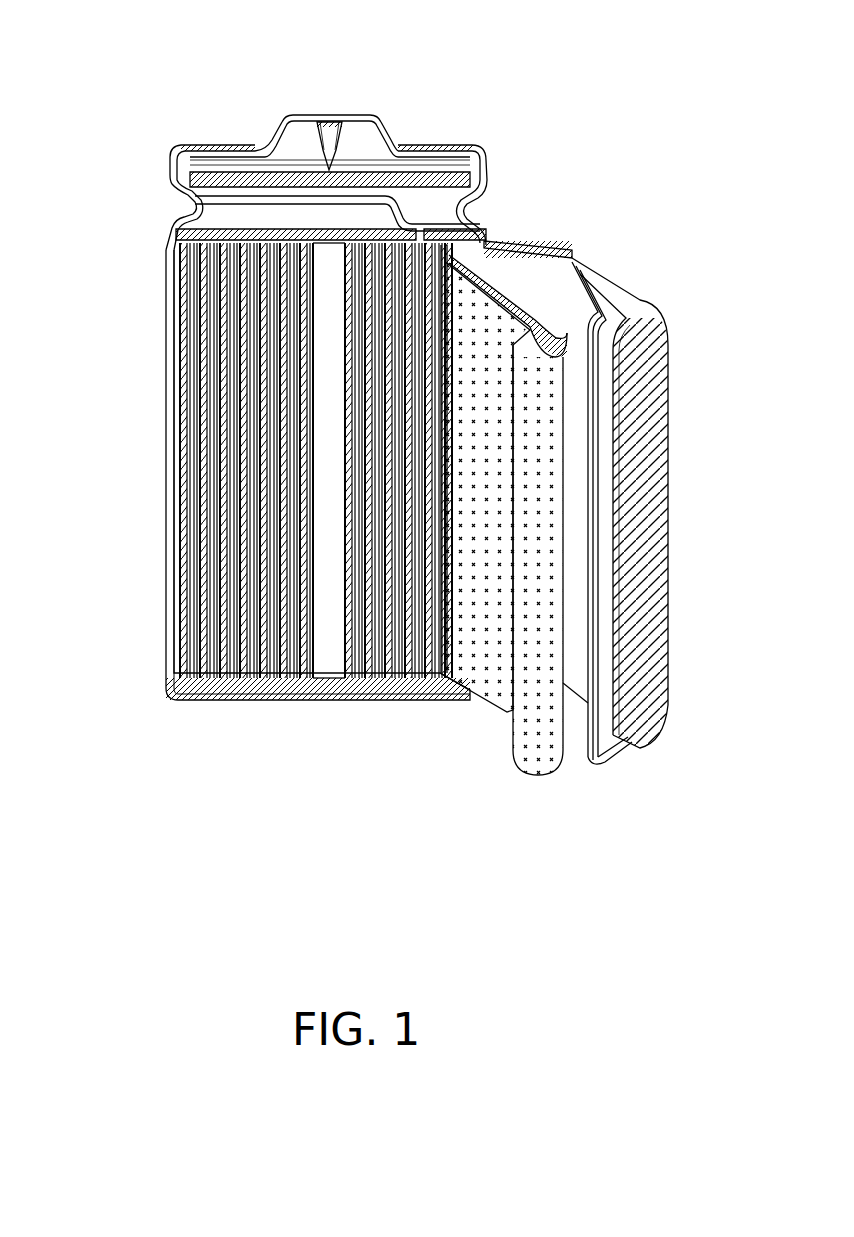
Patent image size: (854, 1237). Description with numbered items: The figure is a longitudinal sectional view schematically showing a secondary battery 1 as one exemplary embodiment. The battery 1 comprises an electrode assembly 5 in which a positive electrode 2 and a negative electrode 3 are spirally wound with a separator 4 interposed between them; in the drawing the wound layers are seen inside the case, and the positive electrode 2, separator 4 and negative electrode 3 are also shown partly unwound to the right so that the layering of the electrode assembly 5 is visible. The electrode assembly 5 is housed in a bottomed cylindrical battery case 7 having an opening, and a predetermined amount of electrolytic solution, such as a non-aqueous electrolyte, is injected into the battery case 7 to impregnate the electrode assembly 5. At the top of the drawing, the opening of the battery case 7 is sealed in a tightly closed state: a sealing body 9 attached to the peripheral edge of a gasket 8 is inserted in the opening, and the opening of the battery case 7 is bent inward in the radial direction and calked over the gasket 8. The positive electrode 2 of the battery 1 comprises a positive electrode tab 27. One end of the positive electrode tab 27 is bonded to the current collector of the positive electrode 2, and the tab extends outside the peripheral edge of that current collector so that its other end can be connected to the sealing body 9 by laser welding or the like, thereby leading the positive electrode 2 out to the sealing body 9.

The battery 1 is at (116, 47).
The positive electrode 2 is at (518, 328).
The negative electrode 3 is at (622, 298).
The separator 4 is at (585, 327).
The electrode assembly 5 is at (683, 275).
The battery case 7 is at (170, 430).
The gasket 8 is at (470, 162).
The sealing body 9 is at (300, 190).
The positive electrode tab 27 is at (395, 205).